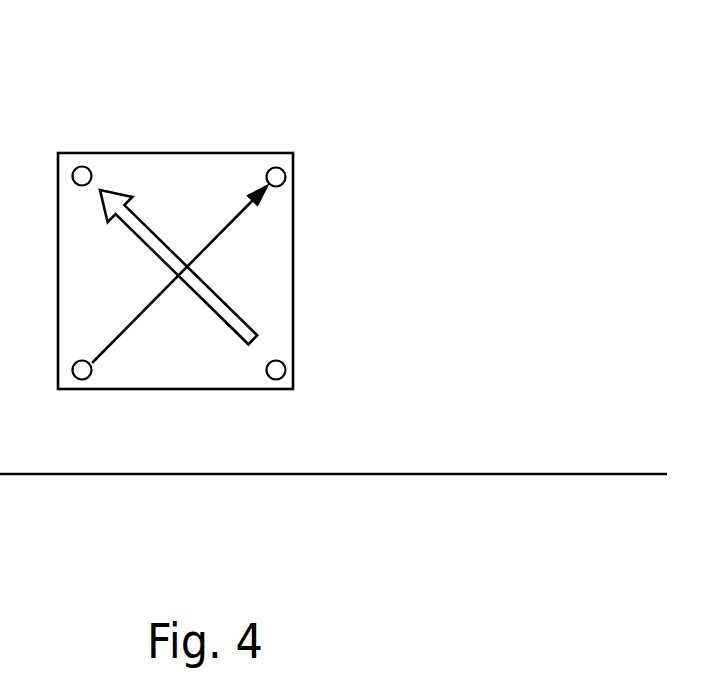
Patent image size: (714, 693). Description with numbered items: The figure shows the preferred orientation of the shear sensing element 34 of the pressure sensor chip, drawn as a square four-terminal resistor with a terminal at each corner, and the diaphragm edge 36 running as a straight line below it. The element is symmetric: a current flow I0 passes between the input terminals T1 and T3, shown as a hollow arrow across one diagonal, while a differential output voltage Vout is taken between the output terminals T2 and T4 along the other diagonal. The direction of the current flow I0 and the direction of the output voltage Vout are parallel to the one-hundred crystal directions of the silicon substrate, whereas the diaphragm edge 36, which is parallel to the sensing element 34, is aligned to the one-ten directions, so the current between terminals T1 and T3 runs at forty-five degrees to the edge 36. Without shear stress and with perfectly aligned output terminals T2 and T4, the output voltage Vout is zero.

The shear sensing element 34 is at (287, 209).
The diaphragm edge 36 is at (512, 474).
The input terminal T1 is at (56, 166).
The output terminal T2 is at (56, 376).
The input terminal T3 is at (300, 377).
The output terminal T4 is at (300, 166).
The current flow I0 is at (160, 232).
The differential output voltage Vout is at (237, 214).